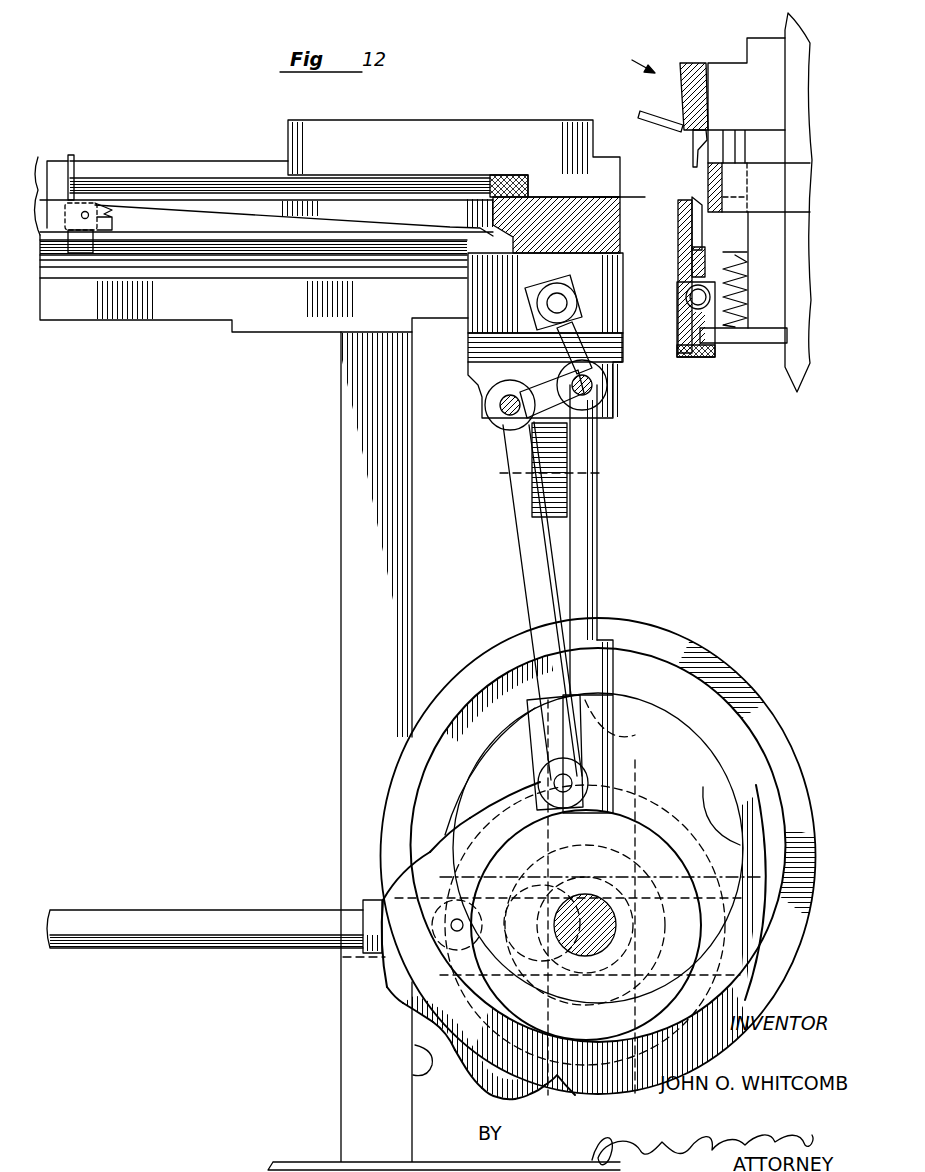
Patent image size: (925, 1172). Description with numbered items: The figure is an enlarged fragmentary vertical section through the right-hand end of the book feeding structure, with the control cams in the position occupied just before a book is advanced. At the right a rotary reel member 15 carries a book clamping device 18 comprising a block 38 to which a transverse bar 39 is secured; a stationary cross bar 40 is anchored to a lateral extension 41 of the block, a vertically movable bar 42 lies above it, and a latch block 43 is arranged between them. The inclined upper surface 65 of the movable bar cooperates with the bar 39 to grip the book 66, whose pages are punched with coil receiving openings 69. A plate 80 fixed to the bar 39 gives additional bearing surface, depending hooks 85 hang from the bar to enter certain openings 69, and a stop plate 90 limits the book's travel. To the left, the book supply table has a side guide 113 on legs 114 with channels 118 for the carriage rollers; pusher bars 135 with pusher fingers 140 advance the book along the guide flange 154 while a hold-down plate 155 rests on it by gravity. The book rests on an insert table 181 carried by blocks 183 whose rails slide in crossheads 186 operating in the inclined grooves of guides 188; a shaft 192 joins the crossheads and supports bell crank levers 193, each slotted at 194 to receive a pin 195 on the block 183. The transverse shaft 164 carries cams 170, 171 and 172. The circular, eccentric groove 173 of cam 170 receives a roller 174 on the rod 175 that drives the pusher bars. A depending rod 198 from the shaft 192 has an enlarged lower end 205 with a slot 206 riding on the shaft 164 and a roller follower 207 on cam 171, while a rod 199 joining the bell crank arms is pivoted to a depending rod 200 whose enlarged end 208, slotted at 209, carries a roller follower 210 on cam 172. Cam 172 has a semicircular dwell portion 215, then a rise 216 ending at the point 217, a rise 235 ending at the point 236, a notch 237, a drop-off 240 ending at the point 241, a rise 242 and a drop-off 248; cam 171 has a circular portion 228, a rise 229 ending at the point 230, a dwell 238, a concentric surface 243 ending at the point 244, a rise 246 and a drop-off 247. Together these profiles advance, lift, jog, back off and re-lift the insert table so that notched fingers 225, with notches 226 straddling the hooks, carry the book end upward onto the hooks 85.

The rotary reel member 15 is at (792, 28).
The book clamping device 18 is at (632, 59).
The block 38 is at (763, 104).
The transverse bar 39 is at (688, 103).
The stationary cross bar 40 is at (697, 357).
The lateral extension 41 is at (745, 340).
The vertically movable bar 42 is at (692, 258).
The latch block 43 is at (738, 248).
The inclined upper surface 65 is at (694, 208).
The book 66 is at (196, 178).
The coil receiving opening 69 is at (518, 176).
The plate 80 is at (686, 78).
The depending hook 85 is at (692, 157).
The stop plate 90 is at (718, 185).
The side guide 113 is at (77, 320).
The leg 114 is at (342, 592).
The channel 118 is at (196, 265).
The pusher bar 135 is at (40, 162).
The pusher finger 140 is at (74, 158).
The guide flange 154 is at (243, 172).
The hold-down plate 155 is at (462, 121).
The transverse shaft 164 is at (600, 905).
The cam 170 is at (705, 660).
The cam 171 is at (660, 790).
The cam 172 is at (735, 838).
The circular groove 173 is at (640, 665).
The roller 174 is at (478, 870).
The rod 175 is at (280, 908).
The insert table 181 is at (356, 205).
The block 183 is at (515, 281).
The crosshead 186 is at (478, 352).
The guide 188 is at (497, 473).
The shaft 192 is at (607, 388).
The bell crank lever 193 is at (612, 334).
The slot 194 is at (556, 296).
The pin 195 is at (572, 298).
The depending rod 198 is at (588, 560).
The rod 199 is at (487, 408).
The depending rod 200 is at (535, 596).
The enlarged lower end 205 is at (606, 698).
The slot 206 is at (612, 835).
The roller follower 207 is at (622, 735).
The enlarged lower end 208 is at (542, 715).
The slot 209 is at (622, 1000).
The roller follower 210 is at (548, 788).
The dwell portion 215 is at (704, 925).
The rise 216 is at (548, 782).
The point 217 is at (448, 818).
The finger 225 is at (617, 197).
The notch 226 is at (622, 204).
The circular portion 228 is at (708, 790).
The rise 229 is at (395, 853).
The point 230 is at (386, 915).
The rise 235 is at (392, 880).
The point 236 is at (362, 922).
The notch 237 is at (390, 985).
The dwell portion 238 is at (343, 957).
The drop-off 240 is at (418, 1018).
The point 241 is at (445, 1032).
The rise 242 is at (462, 1062).
The concentric surface 243 is at (398, 1003).
The point 244 is at (420, 1070).
The rise 246 is at (427, 1062).
The drop-off 247 is at (505, 1099).
The drop-off 248 is at (560, 1090).